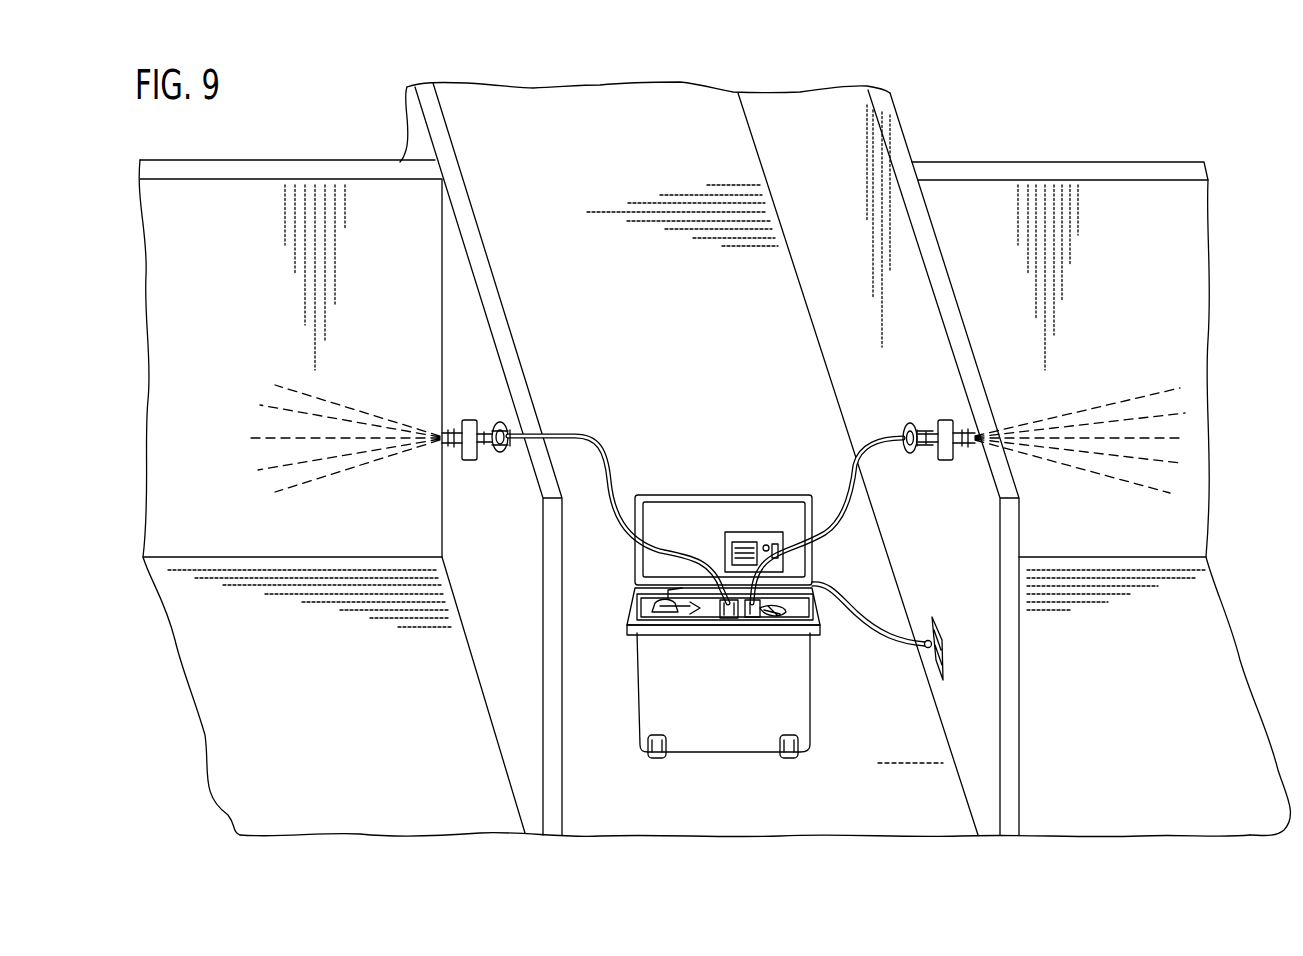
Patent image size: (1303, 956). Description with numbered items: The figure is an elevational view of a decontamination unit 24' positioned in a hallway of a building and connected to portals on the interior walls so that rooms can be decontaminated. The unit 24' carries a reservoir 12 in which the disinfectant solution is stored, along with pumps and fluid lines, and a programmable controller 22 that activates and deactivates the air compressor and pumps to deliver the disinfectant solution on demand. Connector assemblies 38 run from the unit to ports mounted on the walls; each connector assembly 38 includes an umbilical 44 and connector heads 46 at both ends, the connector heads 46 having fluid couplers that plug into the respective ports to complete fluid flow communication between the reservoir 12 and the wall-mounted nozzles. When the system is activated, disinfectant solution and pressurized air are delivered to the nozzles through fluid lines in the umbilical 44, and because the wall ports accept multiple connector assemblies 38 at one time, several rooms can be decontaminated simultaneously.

The reservoir 12 is at (677, 612).
The programmable controller 22 is at (725, 535).
The decontamination unit 24' is at (758, 626).
The connector assembly 38 is at (620, 443).
The umbilical 44 is at (835, 540).
The connector head 46 is at (511, 427).